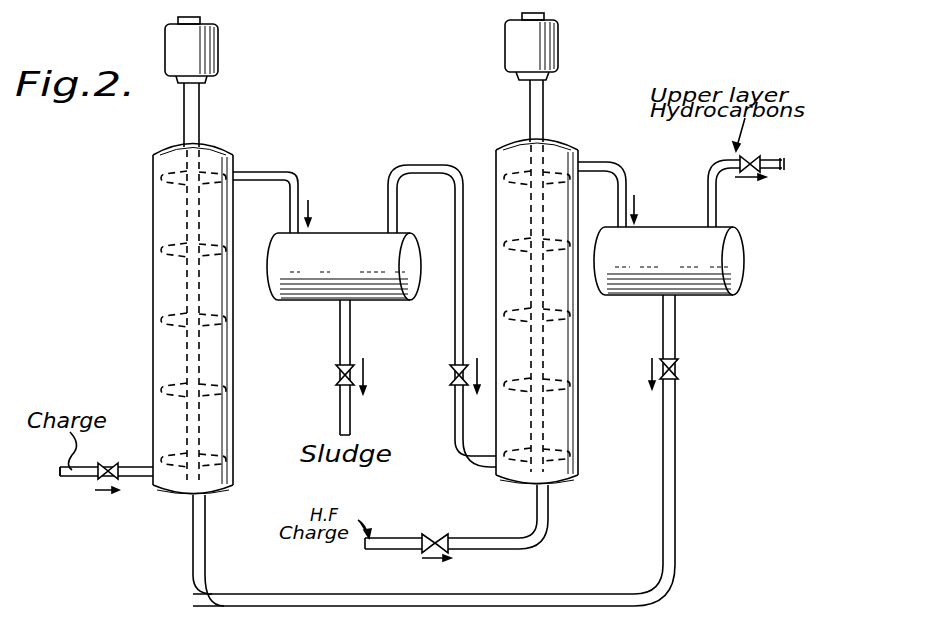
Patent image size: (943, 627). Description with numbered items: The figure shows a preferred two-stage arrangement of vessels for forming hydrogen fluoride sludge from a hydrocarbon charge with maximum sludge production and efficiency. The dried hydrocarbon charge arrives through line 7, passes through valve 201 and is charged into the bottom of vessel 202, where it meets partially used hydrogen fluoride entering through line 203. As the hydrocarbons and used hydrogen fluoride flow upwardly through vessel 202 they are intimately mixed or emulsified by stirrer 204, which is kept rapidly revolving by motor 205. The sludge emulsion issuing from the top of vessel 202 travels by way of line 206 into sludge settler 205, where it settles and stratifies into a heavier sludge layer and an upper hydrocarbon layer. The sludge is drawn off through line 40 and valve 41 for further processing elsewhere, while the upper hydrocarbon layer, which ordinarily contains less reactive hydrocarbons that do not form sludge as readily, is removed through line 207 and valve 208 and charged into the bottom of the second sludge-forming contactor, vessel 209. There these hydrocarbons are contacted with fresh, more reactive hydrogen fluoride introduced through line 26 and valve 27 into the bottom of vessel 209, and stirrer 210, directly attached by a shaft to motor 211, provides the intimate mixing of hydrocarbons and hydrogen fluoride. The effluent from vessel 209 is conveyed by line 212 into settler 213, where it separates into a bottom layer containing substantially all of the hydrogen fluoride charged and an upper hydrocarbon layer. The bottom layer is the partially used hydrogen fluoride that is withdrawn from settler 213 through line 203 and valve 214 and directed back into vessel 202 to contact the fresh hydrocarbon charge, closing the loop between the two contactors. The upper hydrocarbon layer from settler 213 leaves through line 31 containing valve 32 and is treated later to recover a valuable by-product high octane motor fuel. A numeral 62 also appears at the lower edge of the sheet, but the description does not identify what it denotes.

The line 7 is at (78, 480).
The valve 201 is at (120, 459).
The vessel 202 is at (225, 151).
The stirrer 204 is at (187, 216).
The motor / sludge settler 205 is at (221, 56).
The line 206 is at (293, 184).
The line 207 is at (447, 157).
The valve 208 is at (451, 376).
The vessel 209 is at (556, 146).
The stirrer 210 is at (545, 345).
The motor 211 is at (560, 48).
The line 212 is at (622, 181).
The settler 213 is at (742, 250).
The valve 214 is at (678, 369).
The line 203 is at (678, 338).
The line 26 is at (549, 516).
The valve 27 is at (436, 535).
The line 31 is at (706, 176).
The valve 32 is at (757, 158).
The line 40 is at (351, 341).
The valve 41 is at (338, 376).
The line (partially shown) 62 is at (713, 623).